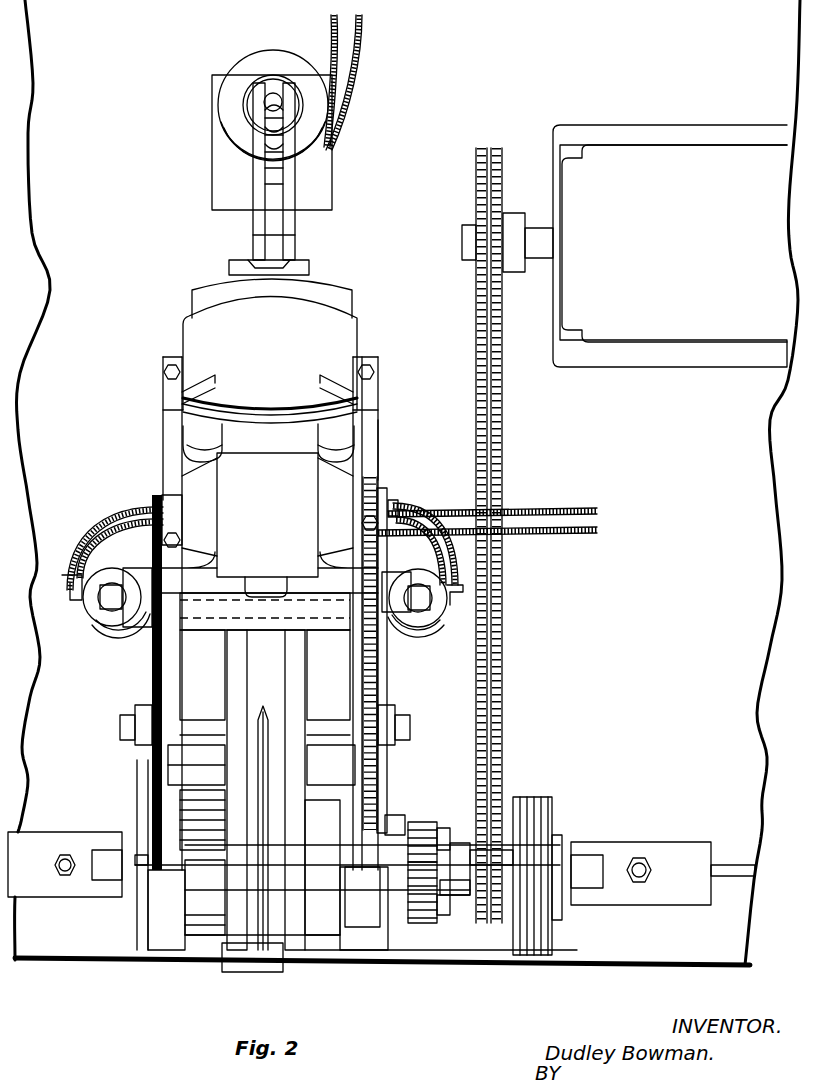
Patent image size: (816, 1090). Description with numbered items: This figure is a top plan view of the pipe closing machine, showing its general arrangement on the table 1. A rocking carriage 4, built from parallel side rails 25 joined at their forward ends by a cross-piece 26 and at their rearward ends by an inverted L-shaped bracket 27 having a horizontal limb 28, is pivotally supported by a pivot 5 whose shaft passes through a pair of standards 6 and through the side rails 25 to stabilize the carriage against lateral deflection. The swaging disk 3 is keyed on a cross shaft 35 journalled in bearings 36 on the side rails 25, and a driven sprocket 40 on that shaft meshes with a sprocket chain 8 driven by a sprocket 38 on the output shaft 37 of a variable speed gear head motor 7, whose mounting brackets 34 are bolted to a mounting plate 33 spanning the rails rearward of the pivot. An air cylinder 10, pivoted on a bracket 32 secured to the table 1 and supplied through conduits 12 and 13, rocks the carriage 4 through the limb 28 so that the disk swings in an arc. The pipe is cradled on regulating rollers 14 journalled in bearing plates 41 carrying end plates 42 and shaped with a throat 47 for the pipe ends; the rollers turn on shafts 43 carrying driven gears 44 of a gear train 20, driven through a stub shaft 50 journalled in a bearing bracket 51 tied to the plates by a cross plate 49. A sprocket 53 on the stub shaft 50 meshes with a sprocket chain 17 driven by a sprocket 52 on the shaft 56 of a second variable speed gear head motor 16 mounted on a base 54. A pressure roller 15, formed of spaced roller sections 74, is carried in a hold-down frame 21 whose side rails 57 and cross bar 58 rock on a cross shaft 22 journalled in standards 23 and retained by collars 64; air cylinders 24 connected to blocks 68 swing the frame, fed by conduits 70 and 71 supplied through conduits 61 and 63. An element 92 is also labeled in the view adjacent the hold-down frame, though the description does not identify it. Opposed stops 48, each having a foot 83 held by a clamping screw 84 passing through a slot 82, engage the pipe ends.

The table 1 is at (75, 930).
The swaging disk 3 is at (275, 726).
The carriage 4 is at (228, 932).
The pivot 5 is at (268, 630).
The standards 6 is at (187, 638).
The gear head motor 7 is at (332, 342).
The sprocket chain 8 is at (378, 690).
The air cylinder 10 is at (218, 140).
The conduit 12 is at (330, 28).
The conduit 13 is at (365, 57).
The regulating rollers 14 is at (312, 930).
The pressure roller 15 is at (195, 845).
The gear head motor 16 is at (665, 168).
The sprocket chain 17 is at (503, 420).
The gear train 20 is at (415, 915).
The hold-down frame 21 is at (152, 778).
The cross shaft 22 is at (205, 735).
The standards 23 is at (132, 714).
The air cylinders 24 is at (94, 632).
The side rails 25 is at (296, 682).
The cross-piece 26 is at (260, 962).
The bracket 27 is at (288, 248).
The horizontal limb 28 is at (290, 170).
The bracket 32 is at (215, 190).
The mounting plate 33 is at (378, 443).
The mounting brackets 34 is at (162, 505).
The cross shaft 35 is at (392, 826).
The bearings 36 is at (205, 897).
The output shaft 37 is at (398, 506).
The sprocket 38 is at (380, 480).
The driven sprocket 40 is at (395, 812).
The bearing plates 41 is at (158, 935).
The end plates 42 is at (137, 912).
The shafts 43 is at (445, 900).
The driven gear 44 is at (428, 820).
The throat 47 is at (143, 855).
The stops 48 is at (65, 830).
The cross plate 49 is at (475, 957).
The stub shaft 50 is at (452, 848).
The bearing bracket 51 is at (545, 816).
The sprocket 52 is at (512, 222).
The sprocket 53 is at (520, 825).
The base 54 is at (627, 352).
The shaft 56 is at (538, 246).
The side rails 57 is at (160, 668).
The cross bar 58 is at (162, 760).
The conduit 61 is at (585, 537).
The conduit 63 is at (570, 510).
The collars 64 is at (120, 730).
The block 68 is at (130, 582).
The conduit 70 is at (138, 528).
The conduit 71 is at (97, 562).
The roller sections 74 is at (333, 868).
The slots 82 is at (732, 864).
The foot 83 is at (30, 880).
The clamping screw 84 is at (640, 860).
The guide block 92 is at (272, 762).